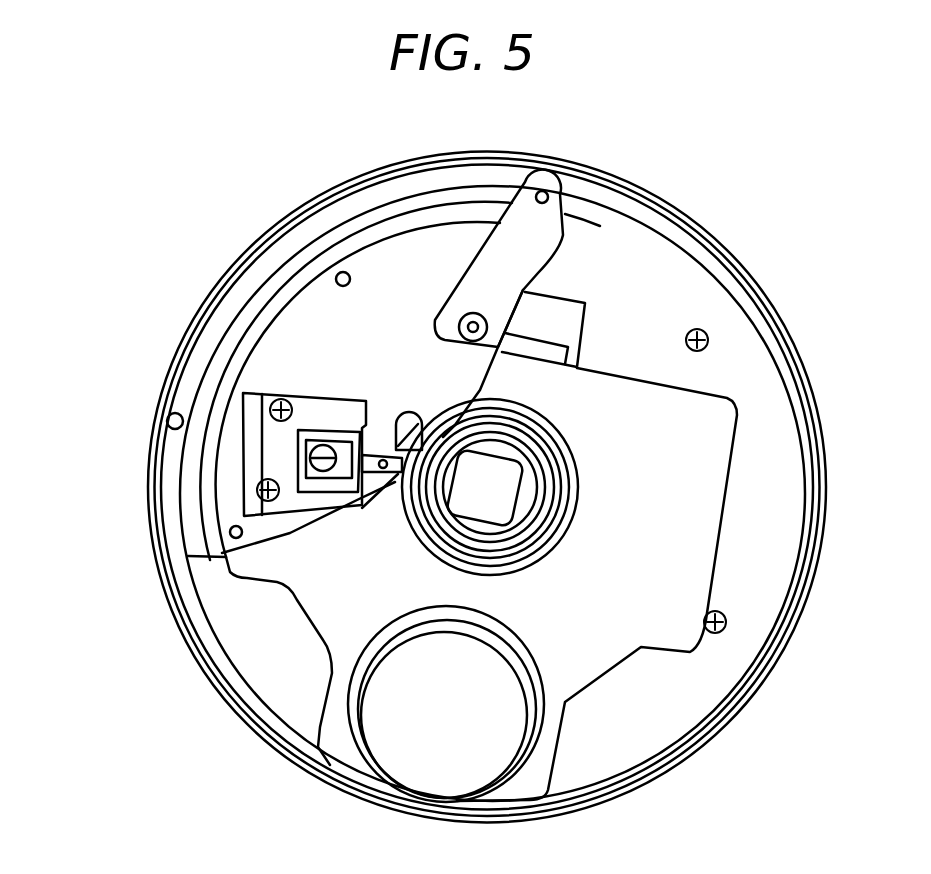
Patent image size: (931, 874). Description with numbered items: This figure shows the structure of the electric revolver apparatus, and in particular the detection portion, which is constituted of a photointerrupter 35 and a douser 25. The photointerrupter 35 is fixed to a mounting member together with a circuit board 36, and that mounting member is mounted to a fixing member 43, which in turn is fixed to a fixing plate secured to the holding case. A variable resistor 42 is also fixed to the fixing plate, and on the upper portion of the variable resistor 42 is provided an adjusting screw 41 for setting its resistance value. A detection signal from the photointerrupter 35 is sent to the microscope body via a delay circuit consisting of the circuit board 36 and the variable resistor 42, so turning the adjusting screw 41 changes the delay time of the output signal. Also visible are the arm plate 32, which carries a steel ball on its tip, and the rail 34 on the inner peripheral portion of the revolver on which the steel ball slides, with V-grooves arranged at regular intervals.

The douser 25 is at (408, 445).
The arm plate 32 is at (548, 213).
The rail 34 is at (387, 210).
The photointerrupter 35 is at (360, 405).
The circuit board 36 is at (372, 410).
The adjusting screw 41 is at (256, 395).
The variable resistor 42 is at (300, 466).
The fixing member 43 is at (232, 518).